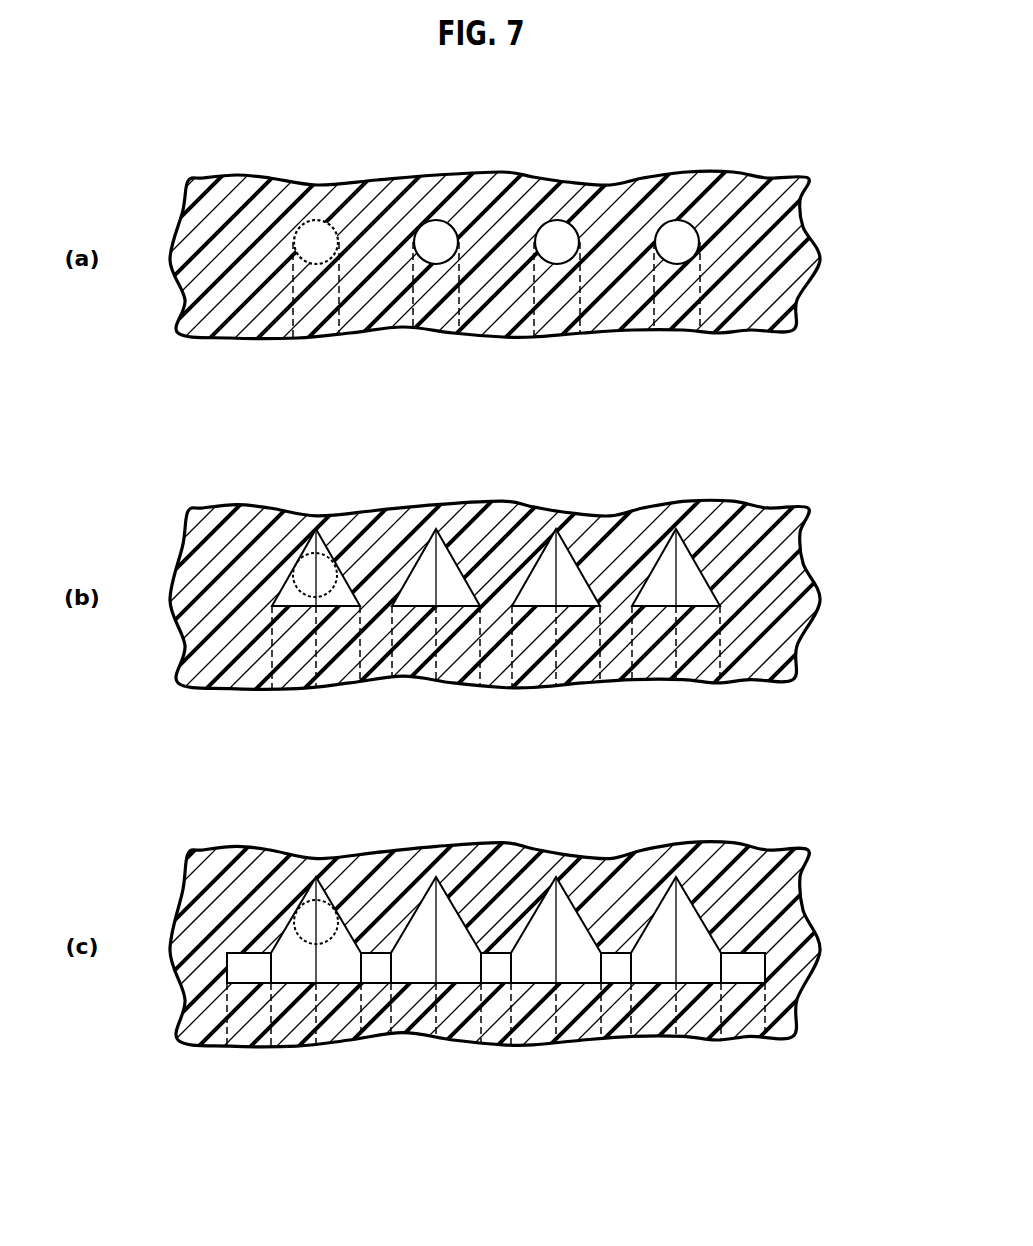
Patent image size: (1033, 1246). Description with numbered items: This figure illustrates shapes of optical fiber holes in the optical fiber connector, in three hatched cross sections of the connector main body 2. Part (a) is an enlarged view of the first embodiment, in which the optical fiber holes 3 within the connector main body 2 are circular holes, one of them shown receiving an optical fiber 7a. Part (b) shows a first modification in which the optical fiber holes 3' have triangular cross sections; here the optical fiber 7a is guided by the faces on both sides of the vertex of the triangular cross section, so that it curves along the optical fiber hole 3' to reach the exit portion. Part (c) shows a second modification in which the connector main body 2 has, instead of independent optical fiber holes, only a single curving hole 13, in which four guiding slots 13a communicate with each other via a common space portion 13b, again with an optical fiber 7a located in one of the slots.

The connector main body 2 is at (748, 192).
The optical fiber hole 3 is at (496, 235).
The optical fiber hole 3' is at (496, 577).
The optical fiber 7a is at (316, 262).
The curving hole 13 is at (457, 973).
The guiding slot 13a is at (296, 930).
The common space portion 13b is at (227, 967).